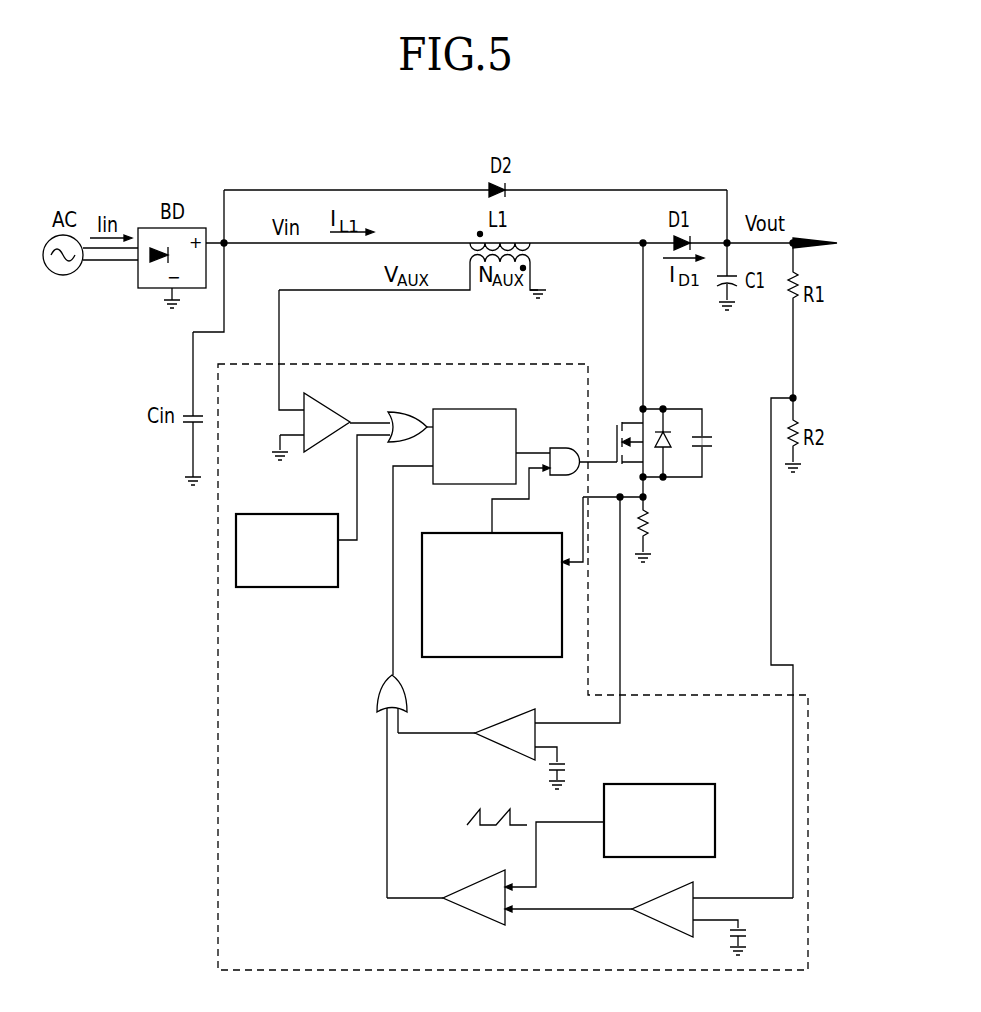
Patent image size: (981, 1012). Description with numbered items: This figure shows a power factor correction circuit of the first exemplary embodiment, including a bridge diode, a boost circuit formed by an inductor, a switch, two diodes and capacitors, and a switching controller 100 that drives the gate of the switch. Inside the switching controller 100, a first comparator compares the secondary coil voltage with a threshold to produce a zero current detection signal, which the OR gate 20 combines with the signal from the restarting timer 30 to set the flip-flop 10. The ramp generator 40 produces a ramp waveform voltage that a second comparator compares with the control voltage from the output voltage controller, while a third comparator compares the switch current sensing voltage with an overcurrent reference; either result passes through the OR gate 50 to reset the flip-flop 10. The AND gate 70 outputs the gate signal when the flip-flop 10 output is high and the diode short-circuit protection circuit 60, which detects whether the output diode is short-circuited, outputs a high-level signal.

The flip-flop 10 is at (470, 409).
The OR gate 20 is at (406, 412).
The restarting timer 30 is at (294, 514).
The ramp generator 40 is at (660, 784).
The OR gate 50 is at (400, 691).
The diode short-circuit protection circuit 60 is at (443, 533).
The AND gate 70 is at (558, 448).
The switching controller 100 is at (809, 754).